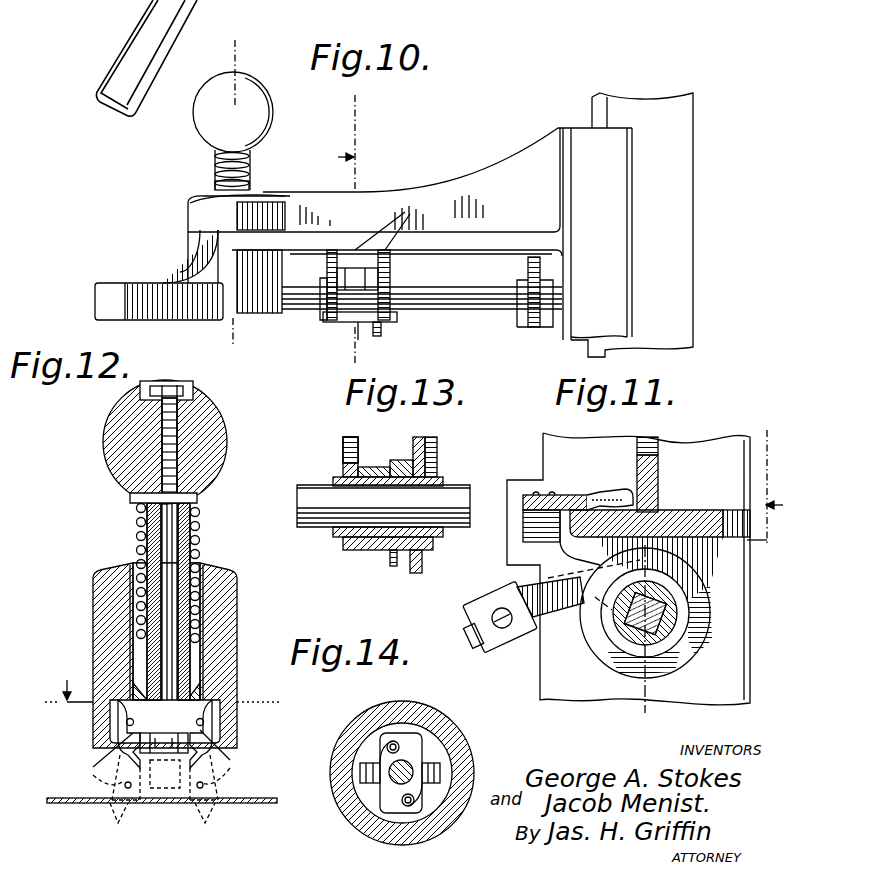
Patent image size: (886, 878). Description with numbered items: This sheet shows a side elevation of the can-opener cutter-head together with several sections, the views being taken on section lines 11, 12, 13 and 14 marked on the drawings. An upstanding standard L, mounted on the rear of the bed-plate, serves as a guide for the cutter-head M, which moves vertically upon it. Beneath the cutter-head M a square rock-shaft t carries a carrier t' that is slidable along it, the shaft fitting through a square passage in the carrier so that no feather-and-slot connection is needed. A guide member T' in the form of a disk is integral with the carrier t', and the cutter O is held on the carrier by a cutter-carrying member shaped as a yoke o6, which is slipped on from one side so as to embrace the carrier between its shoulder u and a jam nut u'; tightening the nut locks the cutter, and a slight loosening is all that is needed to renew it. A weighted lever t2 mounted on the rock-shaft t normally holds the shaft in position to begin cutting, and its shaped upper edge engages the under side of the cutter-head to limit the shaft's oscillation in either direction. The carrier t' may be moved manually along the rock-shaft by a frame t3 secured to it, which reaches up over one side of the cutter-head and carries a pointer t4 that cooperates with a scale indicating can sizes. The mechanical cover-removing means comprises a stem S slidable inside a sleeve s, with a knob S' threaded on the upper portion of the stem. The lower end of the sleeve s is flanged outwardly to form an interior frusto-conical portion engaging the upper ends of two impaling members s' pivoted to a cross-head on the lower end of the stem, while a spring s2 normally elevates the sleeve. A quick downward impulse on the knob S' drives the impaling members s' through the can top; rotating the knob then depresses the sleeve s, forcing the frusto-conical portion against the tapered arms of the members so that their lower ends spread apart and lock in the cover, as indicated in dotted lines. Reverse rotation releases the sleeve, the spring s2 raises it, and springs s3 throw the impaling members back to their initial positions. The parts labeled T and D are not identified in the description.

In FIG. 10, the knob S' is at (211, 112).
In FIG. 12, the knob S' is at (195, 592).
In FIG. 10, the section line 12— 12 is at (237, 194).
In FIG. 10, the sleeve s is at (245, 170).
In FIG. 12, the sleeve s is at (144, 573).
In FIG. 10, the cutter-head M is at (477, 177).
In FIG. 12, the cutter-head M is at (97, 621).
In FIG. 14, the cutter-head M is at (443, 698).
In FIG. 10, the section line 11— 11 is at (350, 240).
In FIG. 10, the rock-shaft t is at (422, 322).
In FIG. 13, the rock-shaft t is at (369, 526).
In FIG. 11, the rock-shaft t is at (697, 602).
In FIG. 10, the carrier t' is at (387, 285).
In FIG. 13, the carrier t' is at (413, 496).
In FIG. 10, the jam nut u' is at (334, 287).
In FIG. 13, the jam nut u' is at (374, 454).
In FIG. 10, the frame t3 is at (392, 222).
In FIG. 13, the frame t3 is at (396, 448).
In FIG. 11, the frame t3 is at (614, 518).
In FIG. 10, the flange T is at (380, 331).
In FIG. 10, the cutter O is at (369, 327).
In FIG. 13, the cutter O is at (392, 552).
In FIG. 11, the cutter O is at (680, 652).
In FIG. 10, the yoke o6 is at (329, 338).
In FIG. 11, the yoke o6 is at (691, 629).
In FIG. 10, the weighted lever t2 is at (518, 290).
In FIG. 11, the weighted lever t2 is at (519, 632).
In FIG. 10, the standard L is at (673, 212).
In FIG. 12, the stem S is at (136, 442).
In FIG. 12, the spring s2 is at (192, 542).
In FIG. 12, the section line 14— 14 is at (163, 701).
In FIG. 12, the impaling members s' is at (159, 765).
In FIG. 12, the plate D is at (253, 805).
In FIG. 13, the shoulder u is at (401, 458).
In FIG. 13, the guide member T' is at (431, 570).
In FIG. 11, the guide member T' is at (696, 617).
In FIG. 11, the pointer t4 is at (578, 477).
In FIG. 11, the section line 13— 13 is at (707, 574).
In FIG. 14, the springs s3 is at (394, 786).